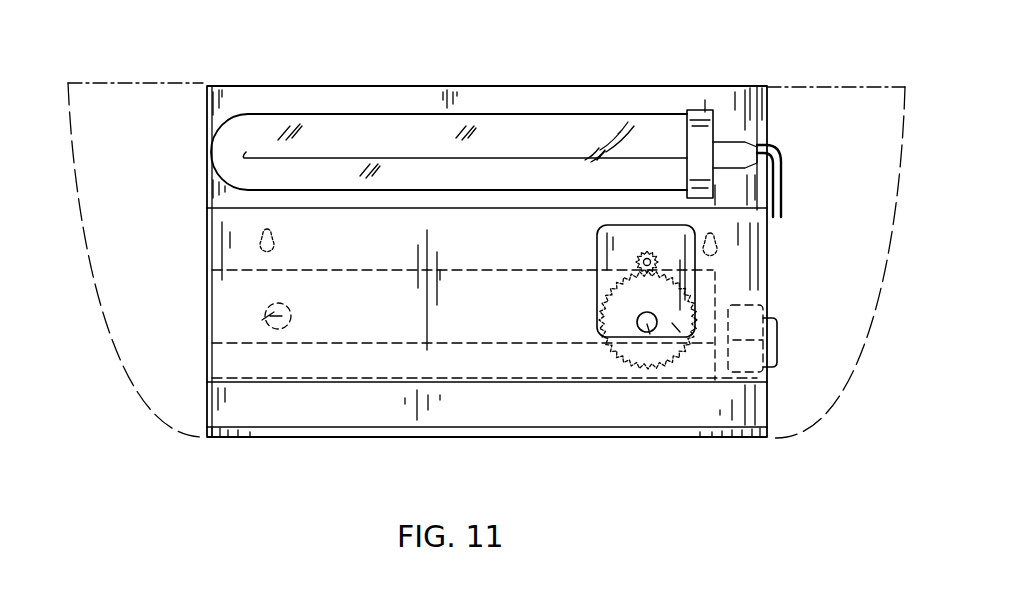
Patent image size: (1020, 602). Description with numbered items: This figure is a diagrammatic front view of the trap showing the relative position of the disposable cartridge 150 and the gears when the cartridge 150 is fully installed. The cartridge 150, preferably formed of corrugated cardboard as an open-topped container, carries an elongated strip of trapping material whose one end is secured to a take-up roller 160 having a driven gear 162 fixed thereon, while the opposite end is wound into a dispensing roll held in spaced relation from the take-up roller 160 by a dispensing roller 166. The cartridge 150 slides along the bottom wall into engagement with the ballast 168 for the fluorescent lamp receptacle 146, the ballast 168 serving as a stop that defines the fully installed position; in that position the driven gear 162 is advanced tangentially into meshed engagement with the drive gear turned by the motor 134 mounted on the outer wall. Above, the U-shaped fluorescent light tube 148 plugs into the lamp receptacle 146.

The motor 134 is at (665, 235).
The fluorescent lamp receptacle 146 is at (735, 148).
The U-shaped fluorescent light tube 148 is at (600, 125).
The disposable cartridge 150 is at (227, 297).
The take-up roller 160 is at (650, 378).
The driven gear 162 is at (677, 347).
The dispensing roller 166 is at (266, 318).
The ballast 168 is at (777, 337).